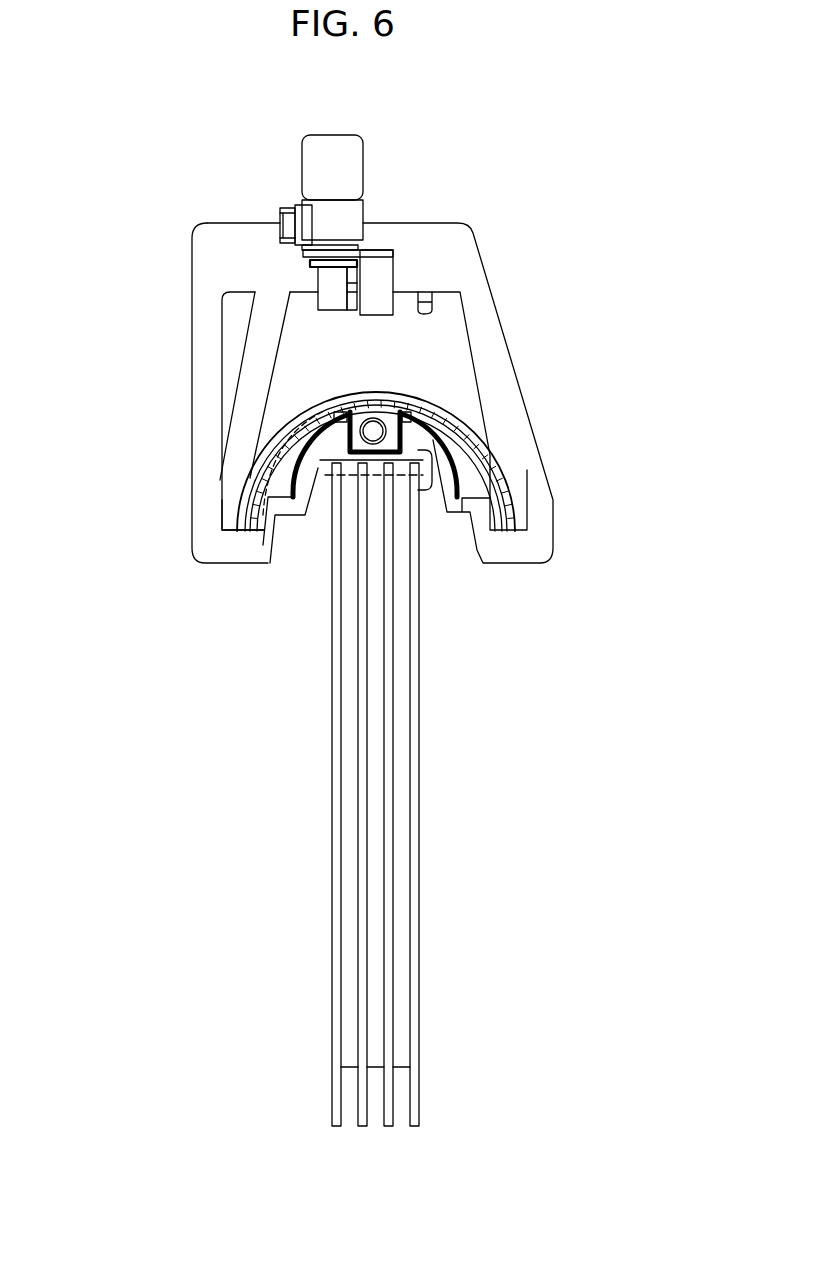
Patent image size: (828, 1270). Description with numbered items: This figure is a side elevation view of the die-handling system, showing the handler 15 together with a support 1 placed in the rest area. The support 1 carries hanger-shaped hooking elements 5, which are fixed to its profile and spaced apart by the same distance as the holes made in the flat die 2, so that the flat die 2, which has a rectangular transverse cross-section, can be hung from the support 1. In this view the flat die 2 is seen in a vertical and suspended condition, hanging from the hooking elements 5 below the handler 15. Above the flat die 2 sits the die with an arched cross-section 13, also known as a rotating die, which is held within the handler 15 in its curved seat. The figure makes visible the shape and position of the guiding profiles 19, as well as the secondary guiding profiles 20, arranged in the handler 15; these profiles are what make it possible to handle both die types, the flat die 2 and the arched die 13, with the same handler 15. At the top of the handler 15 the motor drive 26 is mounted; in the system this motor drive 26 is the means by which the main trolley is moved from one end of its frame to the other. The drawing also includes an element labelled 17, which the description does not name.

The support 1 is at (378, 425).
The flat die 2 is at (418, 723).
The hooking elements 5 is at (352, 482).
The die with an arched cross-section 13 is at (487, 448).
The handler 15 is at (513, 347).
The support plate 17 is at (338, 418).
The guiding profiles 19 is at (305, 458).
The secondary guiding profiles 20 is at (223, 527).
The motor drive 26 is at (365, 165).